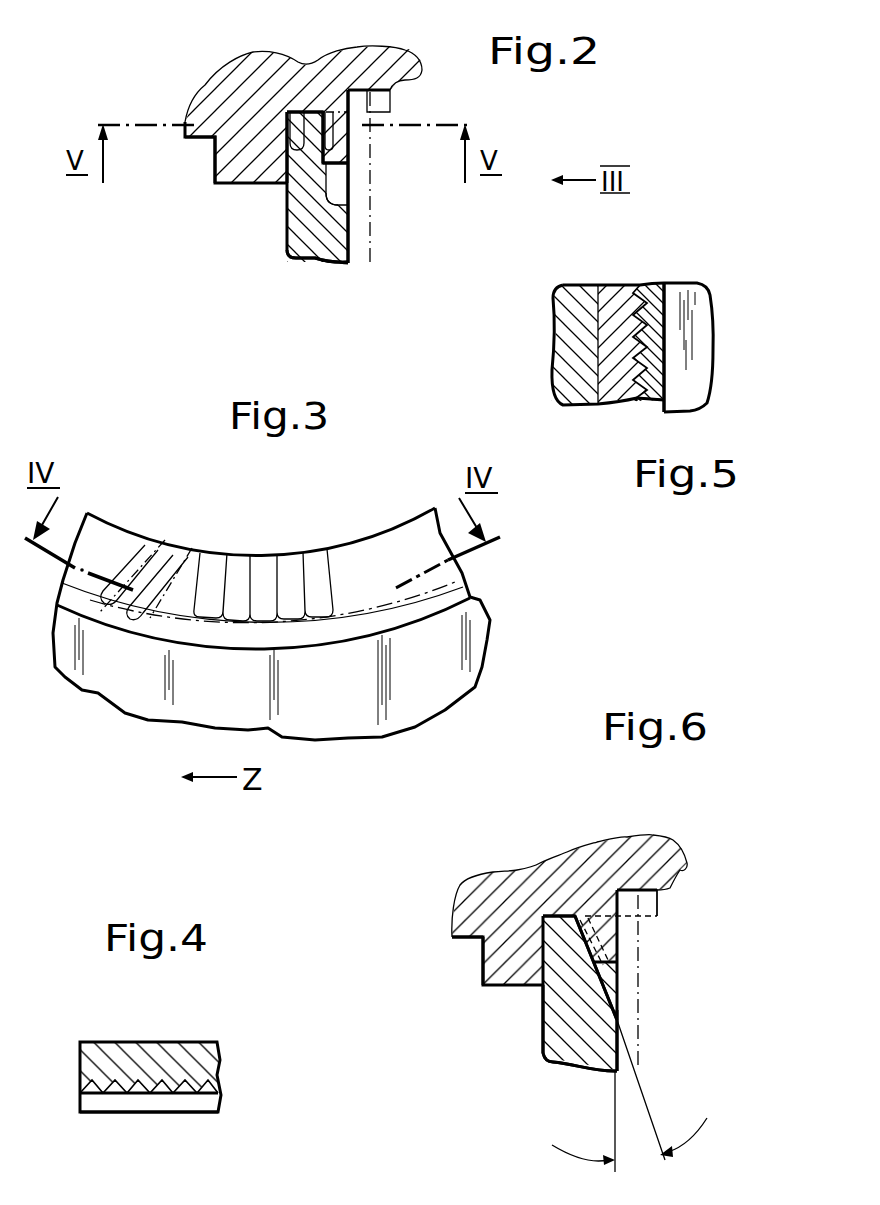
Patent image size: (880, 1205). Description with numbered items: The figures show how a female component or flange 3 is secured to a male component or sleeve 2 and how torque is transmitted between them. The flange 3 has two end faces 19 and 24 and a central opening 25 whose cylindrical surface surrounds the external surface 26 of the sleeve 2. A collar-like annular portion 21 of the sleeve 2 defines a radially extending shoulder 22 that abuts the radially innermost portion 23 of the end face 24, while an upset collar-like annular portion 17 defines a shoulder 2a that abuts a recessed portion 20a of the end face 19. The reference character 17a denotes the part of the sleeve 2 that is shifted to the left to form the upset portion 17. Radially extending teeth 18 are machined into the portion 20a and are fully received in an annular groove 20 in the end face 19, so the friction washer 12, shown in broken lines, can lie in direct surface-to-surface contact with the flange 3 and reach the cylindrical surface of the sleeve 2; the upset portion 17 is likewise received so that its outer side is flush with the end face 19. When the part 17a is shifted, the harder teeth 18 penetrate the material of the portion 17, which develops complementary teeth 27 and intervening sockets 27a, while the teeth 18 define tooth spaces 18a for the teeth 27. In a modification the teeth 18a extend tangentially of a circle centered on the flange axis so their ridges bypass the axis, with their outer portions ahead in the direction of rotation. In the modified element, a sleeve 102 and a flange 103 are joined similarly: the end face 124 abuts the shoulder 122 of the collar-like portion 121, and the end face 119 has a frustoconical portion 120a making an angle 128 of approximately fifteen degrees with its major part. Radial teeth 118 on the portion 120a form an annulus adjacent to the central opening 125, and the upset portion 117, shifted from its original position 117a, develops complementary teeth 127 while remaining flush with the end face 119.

In FIG. 2, the sleeve 2 is at (233, 90).
In FIG. 5, the sleeve 2 is at (685, 338).
In FIG. 2, the shoulder 2a is at (337, 160).
In FIG. 2, the flange 3 is at (302, 250).
In FIG. 5, the flange 3 is at (617, 385).
In FIG. 3, the flange 3 is at (433, 648).
In FIG. 4, the flange 3 is at (168, 1058).
In FIG. 2, the friction washer 12 is at (349, 237).
In FIG. 6, the friction washer 12 is at (630, 958).
In FIG. 2, the upset portion 17 is at (340, 143).
In FIG. 5, the upset portion 17 is at (652, 303).
In FIG. 2, the shifted part of sleeve 17a is at (390, 101).
In FIG. 2, the teeth 18 is at (286, 184).
In FIG. 5, the teeth 18 is at (637, 313).
In FIG. 3, the teeth 18 is at (260, 573).
In FIG. 4, the teeth 18 is at (152, 1094).
In FIG. 5, the tooth spaces 18a is at (637, 320).
In FIG. 3, the tooth spaces 18a is at (176, 553).
In FIG. 2, the end face 19 is at (350, 238).
In FIG. 2, the annular groove 20 is at (340, 195).
In FIG. 3, the annular groove 20 is at (438, 598).
In FIG. 4, the annular groove 20 is at (103, 1100).
In FIG. 2, the recessed end face portion 20a is at (333, 188).
In FIG. 2, the collar-like annular portion 21 is at (223, 163).
In FIG. 2, the shoulder 22 is at (285, 134).
In FIG. 2, the radially innermost portion 23 is at (302, 148).
In FIG. 2, the end face 24 is at (288, 231).
In FIG. 2, the central opening 25 is at (296, 111).
In FIG. 3, the central opening 25 is at (352, 538).
In FIG. 2, the external surface 26 is at (318, 112).
In FIG. 5, the teeth 27 is at (644, 352).
In FIG. 5, the tooth spaces 27a is at (652, 398).
In FIG. 6, the sleeve 102 is at (538, 883).
In FIG. 6, the flange 103 is at (570, 1053).
In FIG. 6, the upset portion 117 is at (600, 914).
In FIG. 6, the original position of upset portion 117a is at (658, 903).
In FIG. 6, the teeth 118 is at (617, 985).
In FIG. 6, the end face 119 is at (618, 1020).
In FIG. 6, the frustoconical end face portion 120a is at (543, 1020).
In FIG. 6, the collar-like portion 121 is at (492, 952).
In FIG. 6, the shoulder 122 is at (543, 933).
In FIG. 6, the end face 124 is at (543, 1047).
In FIG. 6, the central opening 125 is at (560, 913).
In FIG. 6, the teeth 127 is at (607, 997).
In FIG. 6, the angle 128 is at (629, 1098).